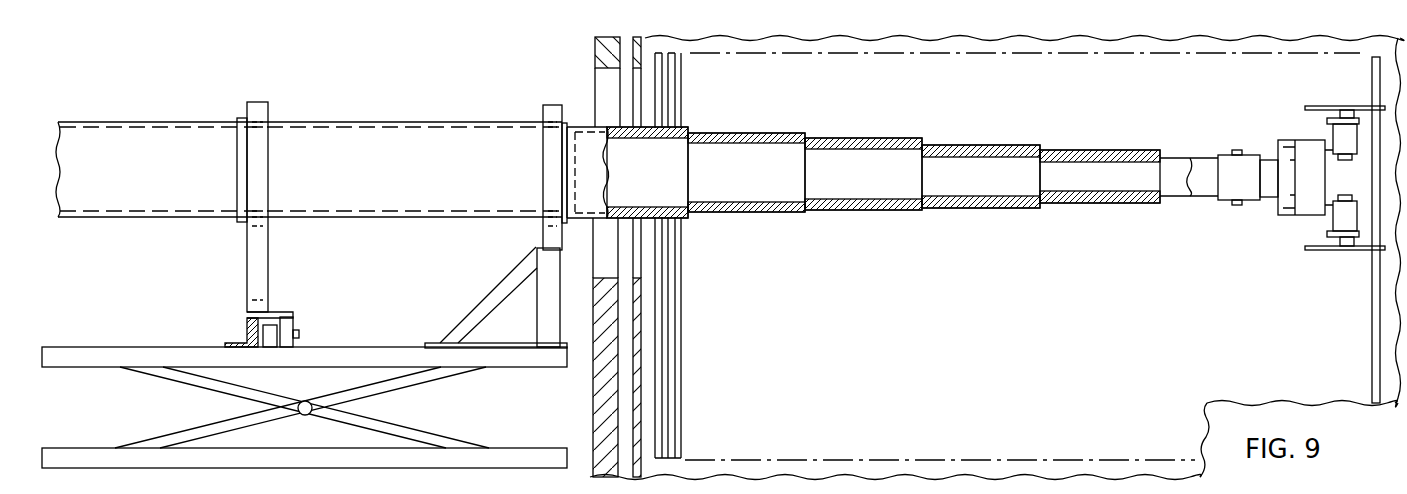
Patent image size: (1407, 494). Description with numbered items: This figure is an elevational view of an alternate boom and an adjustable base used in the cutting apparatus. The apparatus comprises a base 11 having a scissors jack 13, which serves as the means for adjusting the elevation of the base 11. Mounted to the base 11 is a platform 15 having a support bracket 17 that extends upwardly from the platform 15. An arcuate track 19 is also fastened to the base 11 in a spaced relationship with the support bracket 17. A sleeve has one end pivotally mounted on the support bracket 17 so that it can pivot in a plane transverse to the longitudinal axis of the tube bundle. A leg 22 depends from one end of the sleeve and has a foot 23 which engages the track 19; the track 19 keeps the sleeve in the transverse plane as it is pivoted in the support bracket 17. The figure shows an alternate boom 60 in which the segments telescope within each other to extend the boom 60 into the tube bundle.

The base 11 is at (444, 457).
The scissors jack 13 is at (427, 382).
The platform 15 is at (401, 353).
The support bracket 17 is at (553, 295).
The arcuate track 19 is at (247, 336).
The leg 22 is at (262, 258).
The foot 23 is at (291, 323).
The alternate boom 60 is at (755, 200).